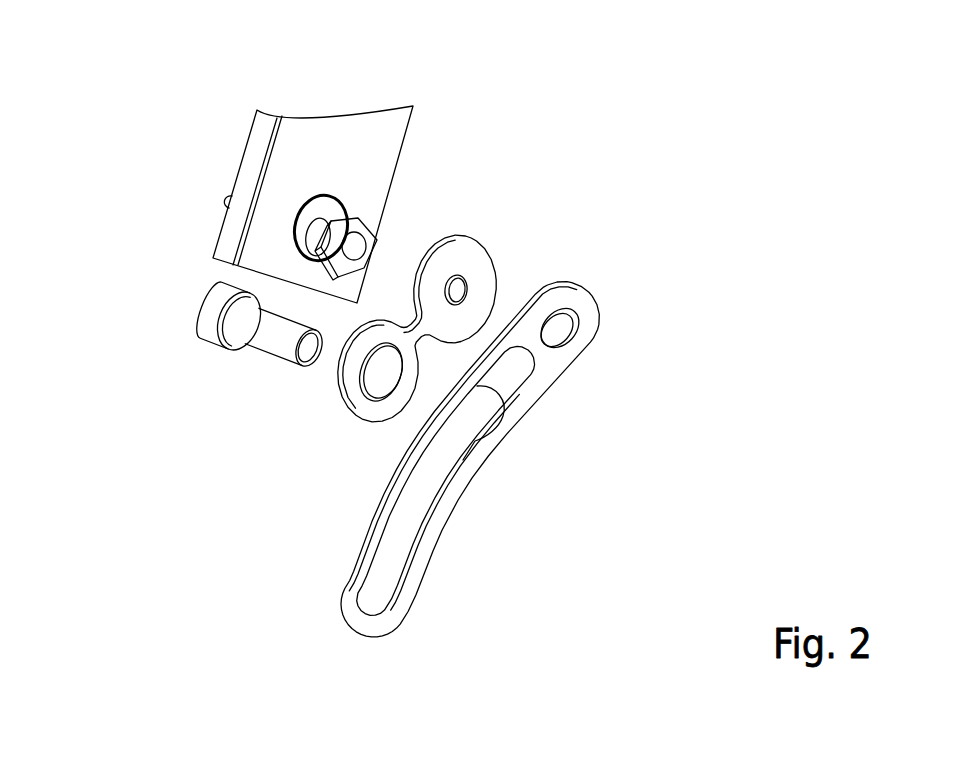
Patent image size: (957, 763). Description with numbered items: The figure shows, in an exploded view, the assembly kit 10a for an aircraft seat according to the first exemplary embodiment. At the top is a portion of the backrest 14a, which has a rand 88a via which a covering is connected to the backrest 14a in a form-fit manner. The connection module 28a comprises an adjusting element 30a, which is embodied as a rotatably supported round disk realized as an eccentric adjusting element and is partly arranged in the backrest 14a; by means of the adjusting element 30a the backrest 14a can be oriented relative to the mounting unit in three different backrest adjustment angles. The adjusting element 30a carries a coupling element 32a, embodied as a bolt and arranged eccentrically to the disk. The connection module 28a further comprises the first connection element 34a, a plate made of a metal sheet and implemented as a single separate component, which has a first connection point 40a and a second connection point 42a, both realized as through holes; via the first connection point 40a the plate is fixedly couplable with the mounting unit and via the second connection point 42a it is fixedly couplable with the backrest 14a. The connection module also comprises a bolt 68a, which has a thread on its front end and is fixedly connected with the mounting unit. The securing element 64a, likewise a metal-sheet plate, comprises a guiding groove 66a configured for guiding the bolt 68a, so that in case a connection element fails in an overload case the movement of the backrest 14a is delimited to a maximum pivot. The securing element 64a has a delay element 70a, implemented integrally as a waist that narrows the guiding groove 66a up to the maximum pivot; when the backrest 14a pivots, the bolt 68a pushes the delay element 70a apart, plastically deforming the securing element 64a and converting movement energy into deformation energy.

The assembly kit 10a is at (176, 174).
The backrest 14a is at (373, 127).
The rand 88a is at (284, 112).
The coupling element 32a is at (323, 235).
The adjusting element 30a is at (347, 203).
The bolt 68a is at (278, 337).
The connection module 28a is at (500, 232).
The first connection element 34a is at (468, 304).
The second connection point 42a is at (459, 289).
The first connection point 40a is at (381, 376).
The securing element 64a is at (530, 362).
The guiding groove 66a is at (400, 549).
The delay element 70a is at (457, 420).